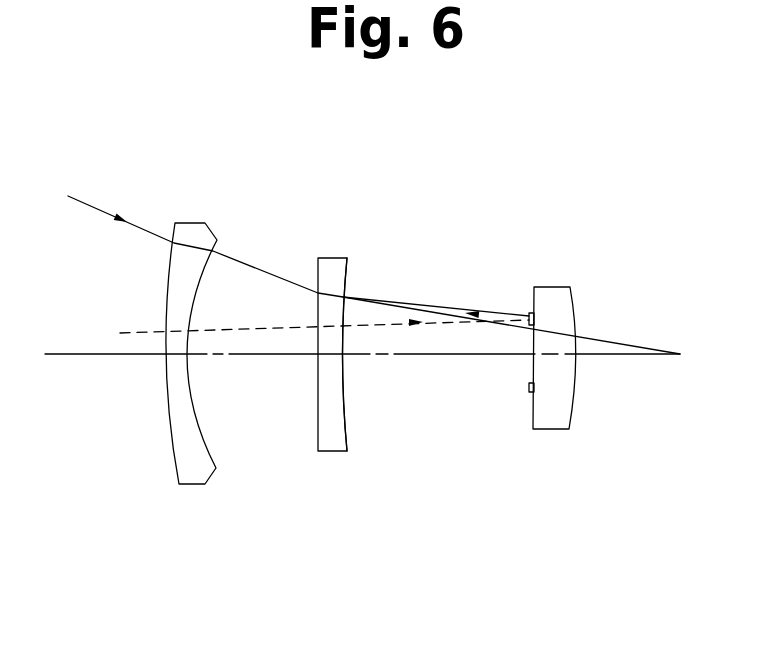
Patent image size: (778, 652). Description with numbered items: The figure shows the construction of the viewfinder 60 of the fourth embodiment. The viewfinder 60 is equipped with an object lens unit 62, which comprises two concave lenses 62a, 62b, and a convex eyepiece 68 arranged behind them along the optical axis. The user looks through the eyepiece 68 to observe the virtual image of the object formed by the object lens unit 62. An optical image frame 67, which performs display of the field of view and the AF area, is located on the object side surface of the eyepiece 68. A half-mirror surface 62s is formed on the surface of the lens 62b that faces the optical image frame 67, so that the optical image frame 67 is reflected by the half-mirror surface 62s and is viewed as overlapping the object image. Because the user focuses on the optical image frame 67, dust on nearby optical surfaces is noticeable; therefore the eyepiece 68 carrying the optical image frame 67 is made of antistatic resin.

The viewfinder 60 is at (362, 365).
The object lens unit 62 is at (309, 403).
The concave lens 62a is at (193, 484).
The concave lens 62b is at (330, 451).
The half-mirror surface 62s is at (344, 282).
The optical image frame 67 is at (529, 325).
The convex eyepiece 68 is at (549, 430).